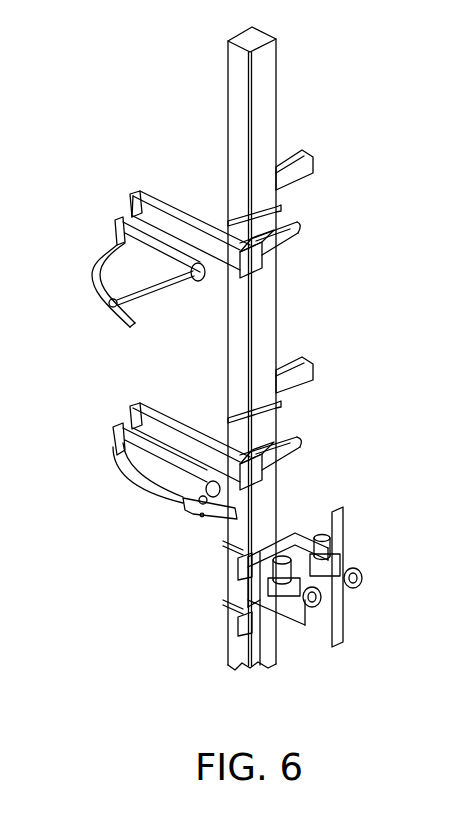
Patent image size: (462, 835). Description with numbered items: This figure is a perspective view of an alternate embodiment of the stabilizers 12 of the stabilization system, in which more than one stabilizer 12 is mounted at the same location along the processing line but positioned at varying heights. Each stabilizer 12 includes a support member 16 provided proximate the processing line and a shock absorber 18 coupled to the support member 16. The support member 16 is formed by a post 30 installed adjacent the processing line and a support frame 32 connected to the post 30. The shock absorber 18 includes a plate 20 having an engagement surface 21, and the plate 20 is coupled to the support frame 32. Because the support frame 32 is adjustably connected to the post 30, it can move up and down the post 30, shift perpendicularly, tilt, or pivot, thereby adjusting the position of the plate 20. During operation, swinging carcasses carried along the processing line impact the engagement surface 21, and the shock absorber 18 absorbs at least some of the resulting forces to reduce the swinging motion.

The stabilizer 12 is at (238, 346).
The support member 16 is at (264, 358).
The shock absorber 18 is at (210, 287).
The plate 20 is at (93, 297).
The engagement surface 21 is at (175, 506).
The post 30 is at (263, 128).
The support frame 32 is at (193, 212).